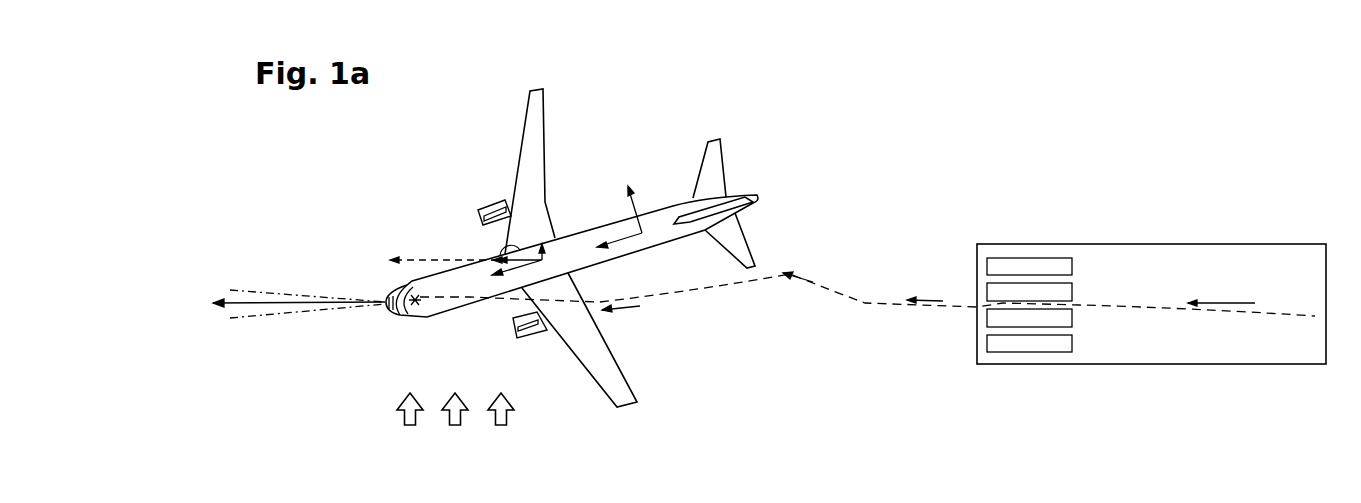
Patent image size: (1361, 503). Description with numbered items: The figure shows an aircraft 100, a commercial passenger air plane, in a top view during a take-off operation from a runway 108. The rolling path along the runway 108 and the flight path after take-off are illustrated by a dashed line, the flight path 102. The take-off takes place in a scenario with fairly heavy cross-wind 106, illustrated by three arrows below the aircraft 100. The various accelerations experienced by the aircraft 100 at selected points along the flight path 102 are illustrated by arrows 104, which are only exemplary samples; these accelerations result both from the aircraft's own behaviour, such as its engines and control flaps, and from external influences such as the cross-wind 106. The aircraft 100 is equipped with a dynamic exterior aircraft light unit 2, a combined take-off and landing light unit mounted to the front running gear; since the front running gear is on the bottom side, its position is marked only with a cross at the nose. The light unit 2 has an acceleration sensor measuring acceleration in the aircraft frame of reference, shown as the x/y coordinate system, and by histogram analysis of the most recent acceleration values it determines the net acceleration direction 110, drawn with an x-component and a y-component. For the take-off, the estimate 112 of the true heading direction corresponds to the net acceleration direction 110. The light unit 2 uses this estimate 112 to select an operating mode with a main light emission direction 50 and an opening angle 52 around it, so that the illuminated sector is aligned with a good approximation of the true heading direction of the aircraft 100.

The aircraft 100 is at (725, 170).
The dynamic exterior aircraft light unit 2 is at (415, 318).
The net acceleration direction 110 is at (503, 248).
The estimate of the true heading direction 112 is at (421, 258).
The main light emission direction 50 is at (240, 307).
The opening angle 52 is at (282, 315).
The flight path 102 is at (867, 302).
The arrows 104 is at (628, 310).
The cross-wind 106 is at (400, 412).
The runway 108 is at (1169, 244).